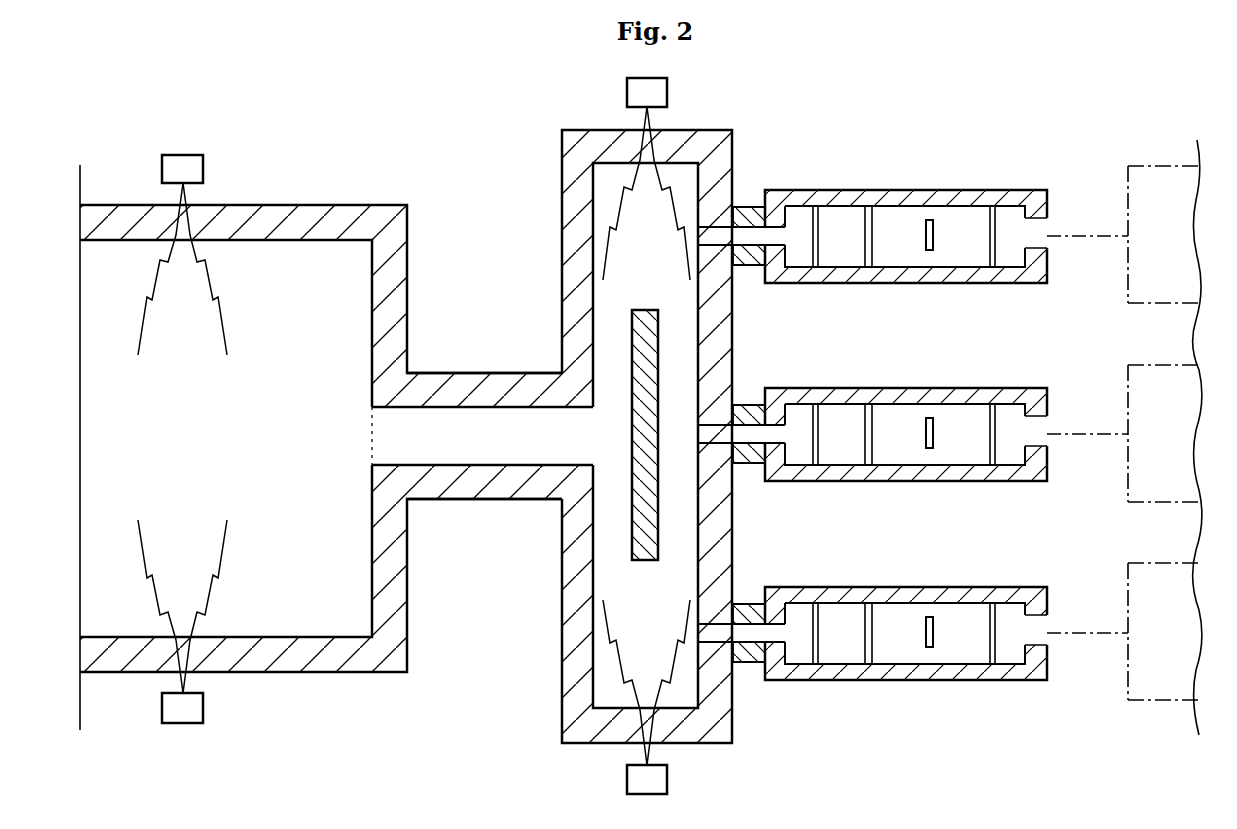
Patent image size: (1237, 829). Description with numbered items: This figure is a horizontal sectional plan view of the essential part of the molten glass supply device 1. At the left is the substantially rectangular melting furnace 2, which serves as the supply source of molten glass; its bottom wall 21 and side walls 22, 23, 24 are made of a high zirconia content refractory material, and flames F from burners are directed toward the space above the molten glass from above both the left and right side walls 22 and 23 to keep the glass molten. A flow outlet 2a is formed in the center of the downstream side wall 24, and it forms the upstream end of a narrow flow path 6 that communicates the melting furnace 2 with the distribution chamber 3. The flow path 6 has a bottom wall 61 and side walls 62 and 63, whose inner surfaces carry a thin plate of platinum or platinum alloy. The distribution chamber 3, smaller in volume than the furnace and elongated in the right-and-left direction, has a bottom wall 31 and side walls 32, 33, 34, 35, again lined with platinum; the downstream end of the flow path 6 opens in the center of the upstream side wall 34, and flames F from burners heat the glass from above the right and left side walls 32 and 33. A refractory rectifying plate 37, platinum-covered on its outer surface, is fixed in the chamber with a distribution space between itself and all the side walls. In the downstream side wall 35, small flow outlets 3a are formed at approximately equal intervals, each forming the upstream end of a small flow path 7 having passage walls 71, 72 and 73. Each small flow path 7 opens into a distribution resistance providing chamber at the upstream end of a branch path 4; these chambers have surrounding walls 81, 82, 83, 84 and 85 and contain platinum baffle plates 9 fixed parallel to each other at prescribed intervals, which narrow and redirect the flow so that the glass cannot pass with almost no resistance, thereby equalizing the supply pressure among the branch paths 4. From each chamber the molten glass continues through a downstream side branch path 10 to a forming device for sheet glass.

The molten glass supply device 1 is at (833, 87).
The melting furnace 2 is at (118, 677).
The flow outlet 2a is at (372, 437).
The bottom wall 21 is at (312, 275).
The side wall 22 is at (255, 652).
The side wall 23 is at (275, 225).
The side wall 24 is at (392, 565).
The distribution chamber 3 is at (588, 748).
The small flow outlet 3a is at (697, 232).
The bottom wall 31 is at (680, 682).
The side wall 32 is at (606, 715).
The side wall 33 is at (580, 155).
The side wall 34 is at (572, 249).
The side wall 35 is at (725, 365).
The rectifying plate 37 is at (632, 438).
The branch path 4 is at (913, 220).
The flow path 6 is at (492, 428).
The bottom wall 61 is at (448, 425).
The side wall 62 is at (514, 483).
The side wall 63 is at (526, 395).
The small flow path 7 is at (760, 198).
The passage wall 71 is at (748, 200).
The passage wall 72 is at (746, 262).
The passage wall 73 is at (736, 205).
The surrounding wall 81 is at (904, 220).
The surrounding wall 82 is at (870, 283).
The surrounding wall 83 is at (876, 188).
The surrounding wall 84 is at (768, 282).
The surrounding wall 85 is at (1042, 265).
The baffle plate 9 is at (813, 225).
The downstream side branch path 10 is at (1086, 234).
The flame F is at (215, 332).